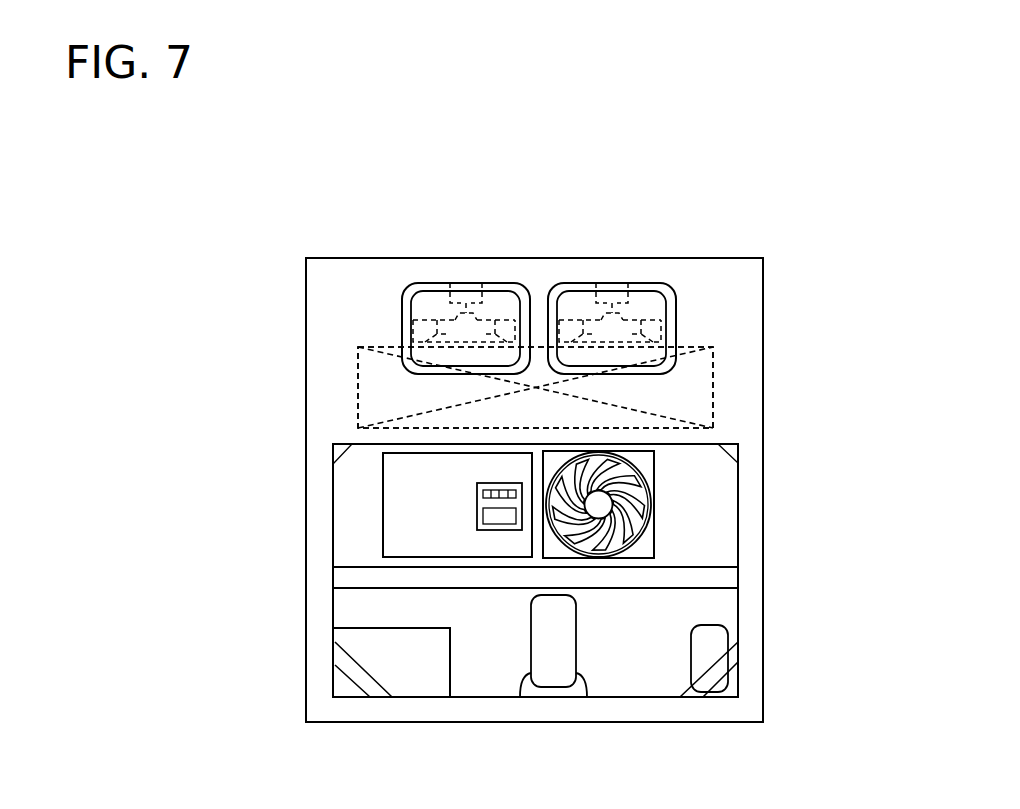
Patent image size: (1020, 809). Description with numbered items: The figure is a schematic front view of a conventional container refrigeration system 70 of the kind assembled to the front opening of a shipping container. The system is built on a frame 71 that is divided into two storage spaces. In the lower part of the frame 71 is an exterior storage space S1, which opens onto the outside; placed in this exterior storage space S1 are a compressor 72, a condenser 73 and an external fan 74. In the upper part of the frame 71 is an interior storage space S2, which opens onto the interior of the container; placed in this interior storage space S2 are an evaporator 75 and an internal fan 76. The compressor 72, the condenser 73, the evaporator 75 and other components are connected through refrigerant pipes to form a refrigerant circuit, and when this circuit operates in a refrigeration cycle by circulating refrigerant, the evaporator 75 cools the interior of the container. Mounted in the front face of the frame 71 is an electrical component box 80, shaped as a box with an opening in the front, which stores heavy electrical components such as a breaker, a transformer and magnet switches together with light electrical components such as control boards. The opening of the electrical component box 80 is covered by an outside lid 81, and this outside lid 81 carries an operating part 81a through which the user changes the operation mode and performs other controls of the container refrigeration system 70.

The container refrigeration system 70 is at (797, 233).
The frame 71 is at (318, 390).
The compressor 72 is at (565, 651).
The condenser 73 is at (728, 578).
The external fan 74 is at (645, 493).
The evaporator 75 is at (713, 387).
The internal fan 76 is at (565, 285).
The electrical component box 80 is at (383, 486).
The outside lid 81 is at (405, 528).
The operating part 81a is at (500, 530).
The exterior storage space S1 is at (713, 609).
The interior storage space S2 is at (707, 337).